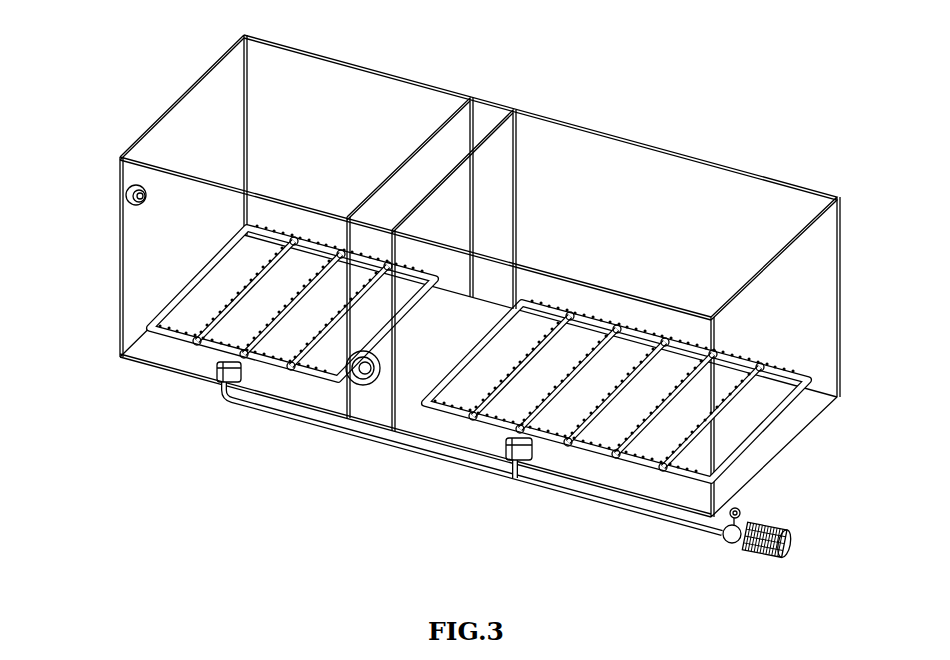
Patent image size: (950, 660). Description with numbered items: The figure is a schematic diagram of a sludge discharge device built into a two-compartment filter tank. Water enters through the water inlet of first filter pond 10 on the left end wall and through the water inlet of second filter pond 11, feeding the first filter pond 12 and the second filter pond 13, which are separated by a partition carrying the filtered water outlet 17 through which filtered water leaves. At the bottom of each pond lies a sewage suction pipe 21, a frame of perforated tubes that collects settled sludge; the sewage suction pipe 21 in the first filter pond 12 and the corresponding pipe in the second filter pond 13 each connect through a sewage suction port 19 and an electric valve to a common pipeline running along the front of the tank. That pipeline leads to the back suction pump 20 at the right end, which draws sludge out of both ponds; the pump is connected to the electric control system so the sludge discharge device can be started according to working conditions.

The water inlet of first filter pond 10 is at (128, 187).
The water inlet of second filter pond 11 is at (692, 337).
The first filter pond 12 is at (347, 120).
The second filter pond 13 is at (627, 182).
The filtered water outlet 17 is at (363, 382).
The sewage suction port 19 is at (217, 380).
The back suction pump 20 is at (787, 530).
The sewage suction pipe 21 is at (197, 313).